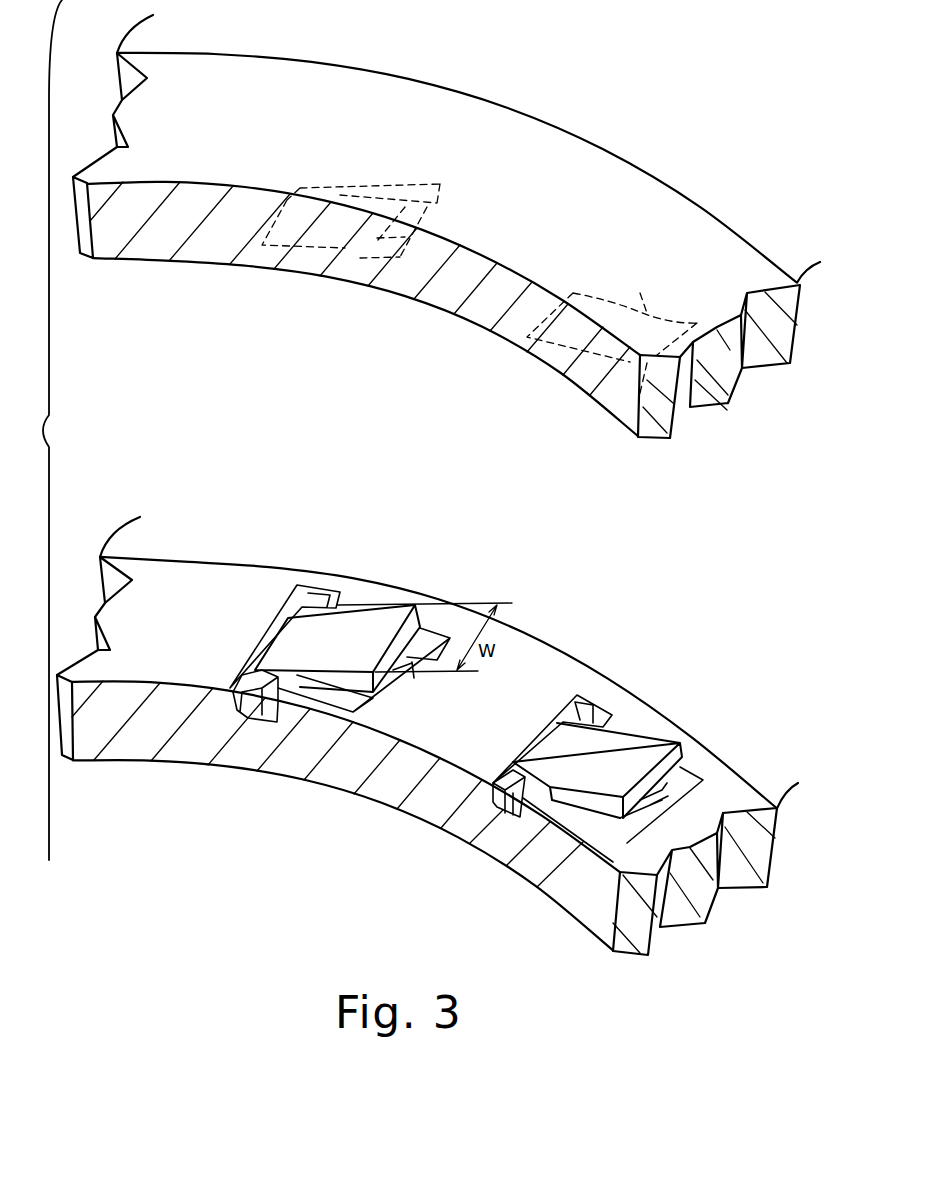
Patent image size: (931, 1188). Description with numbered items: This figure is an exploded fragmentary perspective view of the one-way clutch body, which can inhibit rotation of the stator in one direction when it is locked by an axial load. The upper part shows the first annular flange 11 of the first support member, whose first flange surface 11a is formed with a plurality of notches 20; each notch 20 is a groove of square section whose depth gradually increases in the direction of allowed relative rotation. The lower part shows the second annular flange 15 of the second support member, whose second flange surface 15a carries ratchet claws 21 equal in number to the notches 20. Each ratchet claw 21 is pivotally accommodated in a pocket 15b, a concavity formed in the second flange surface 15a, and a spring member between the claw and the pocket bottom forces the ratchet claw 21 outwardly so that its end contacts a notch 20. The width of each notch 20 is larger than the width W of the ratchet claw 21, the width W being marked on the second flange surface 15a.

The first annular flange 11 is at (500, 107).
The first flange surface 11a is at (303, 272).
The notch 20 is at (377, 182).
The second annular flange 15 is at (117, 747).
The second flange surface 15a is at (512, 650).
The pocket 15b is at (365, 706).
The ratchet claw 21 is at (377, 628).